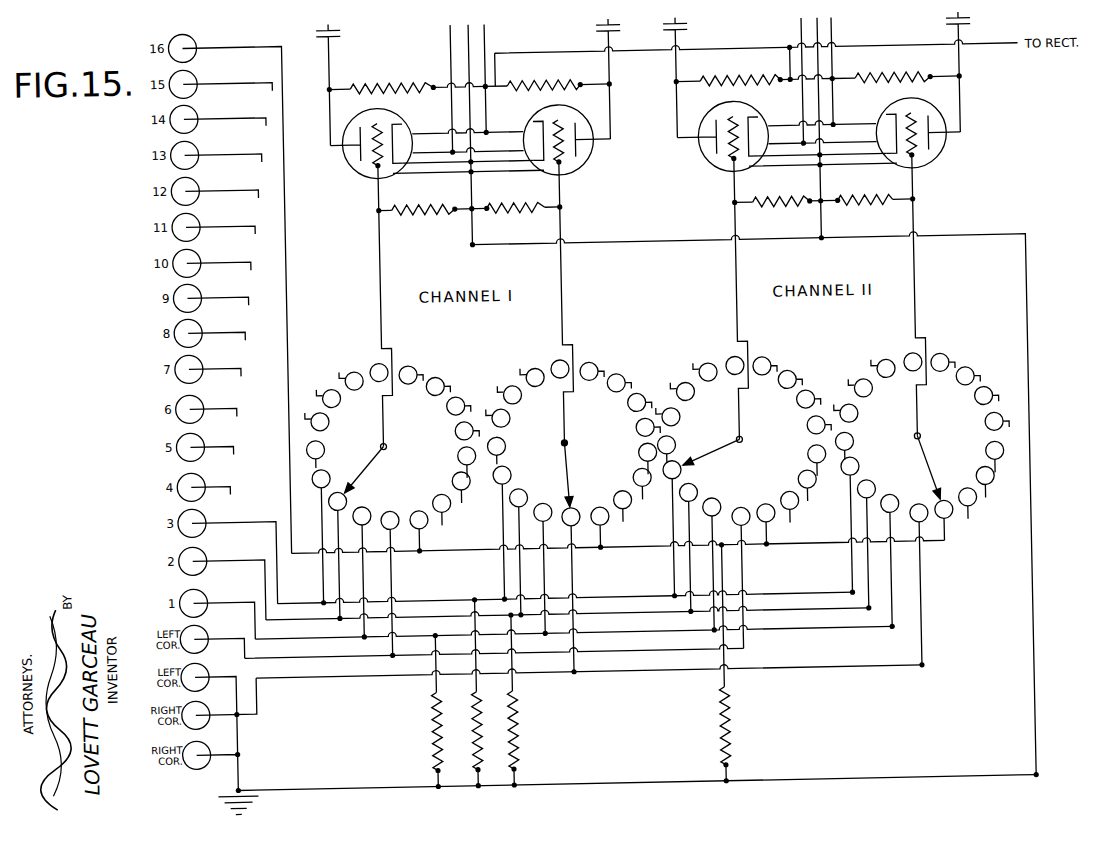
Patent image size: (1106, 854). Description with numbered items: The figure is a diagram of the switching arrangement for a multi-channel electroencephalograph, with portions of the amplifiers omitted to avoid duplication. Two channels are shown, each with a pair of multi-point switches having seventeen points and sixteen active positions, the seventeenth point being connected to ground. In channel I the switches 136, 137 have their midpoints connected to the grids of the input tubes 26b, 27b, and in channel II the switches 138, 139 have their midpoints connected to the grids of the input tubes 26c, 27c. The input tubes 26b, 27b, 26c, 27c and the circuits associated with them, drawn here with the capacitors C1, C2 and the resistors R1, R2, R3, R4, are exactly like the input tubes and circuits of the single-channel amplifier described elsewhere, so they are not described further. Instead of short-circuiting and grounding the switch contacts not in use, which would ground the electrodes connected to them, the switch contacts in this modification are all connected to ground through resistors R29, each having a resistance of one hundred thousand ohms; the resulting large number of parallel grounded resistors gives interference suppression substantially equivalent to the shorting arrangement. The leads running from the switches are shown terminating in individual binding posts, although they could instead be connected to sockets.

The coupling capacitor C1 is at (514, 81).
The output capacitor to rectifier C2 is at (774, 76).
The plate resistor R4 is at (582, 73).
The plate resistor R3 is at (733, 72).
The cathode resistor R2 is at (596, 214).
The cathode resistor R1 is at (684, 213).
The input tube 26b is at (358, 166).
The input tube 27b is at (589, 166).
The input tube 26c is at (714, 165).
The input tube 27c is at (944, 162).
The switch 136 is at (432, 406).
The switch 137 is at (613, 406).
The switch 138 is at (788, 406).
The switch 139 is at (966, 406).
The correction resistor R29 is at (566, 666).